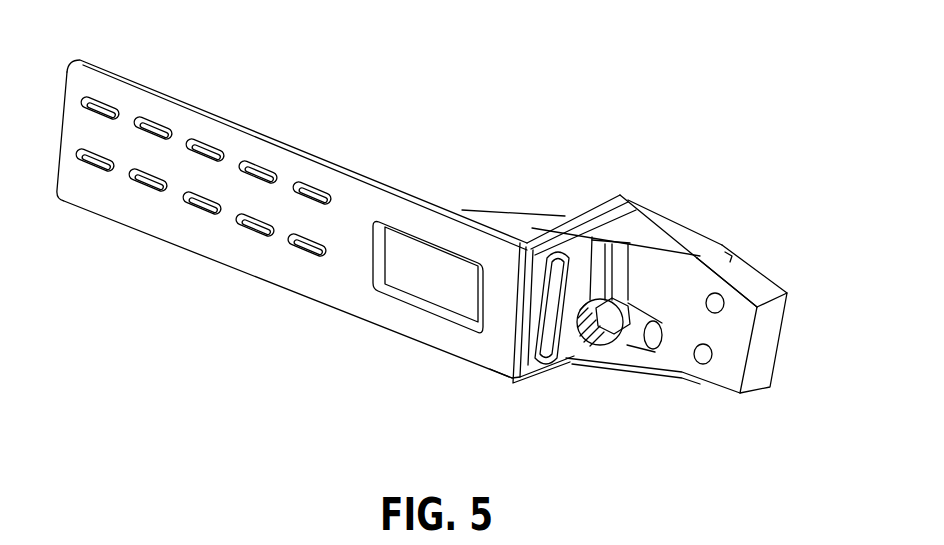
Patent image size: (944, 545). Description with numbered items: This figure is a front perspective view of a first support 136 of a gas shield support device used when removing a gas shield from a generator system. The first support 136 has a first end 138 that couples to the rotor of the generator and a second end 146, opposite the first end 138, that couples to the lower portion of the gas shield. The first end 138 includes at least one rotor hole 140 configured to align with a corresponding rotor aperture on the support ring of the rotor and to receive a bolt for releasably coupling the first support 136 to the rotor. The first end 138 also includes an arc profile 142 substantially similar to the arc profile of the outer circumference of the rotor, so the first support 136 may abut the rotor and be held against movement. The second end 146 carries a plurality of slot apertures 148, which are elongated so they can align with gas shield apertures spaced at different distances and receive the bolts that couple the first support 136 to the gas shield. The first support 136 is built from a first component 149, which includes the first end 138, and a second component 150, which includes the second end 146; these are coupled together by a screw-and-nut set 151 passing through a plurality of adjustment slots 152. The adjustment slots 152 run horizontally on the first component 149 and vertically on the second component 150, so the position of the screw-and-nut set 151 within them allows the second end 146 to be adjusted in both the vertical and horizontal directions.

The first support 136 is at (292, 90).
The first end 138 is at (745, 312).
The rotor hole 140 is at (715, 300).
The arc profile 142 is at (790, 357).
The second end 146 is at (195, 237).
The slot apertures 148 is at (107, 120).
The first component 149 is at (518, 375).
The second component 150 is at (497, 367).
The screw-and-nut set 151 is at (605, 328).
The adjustment slots 152 is at (555, 278).